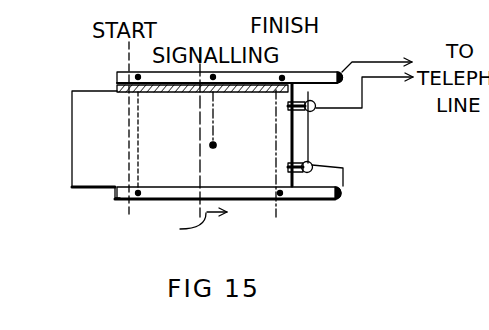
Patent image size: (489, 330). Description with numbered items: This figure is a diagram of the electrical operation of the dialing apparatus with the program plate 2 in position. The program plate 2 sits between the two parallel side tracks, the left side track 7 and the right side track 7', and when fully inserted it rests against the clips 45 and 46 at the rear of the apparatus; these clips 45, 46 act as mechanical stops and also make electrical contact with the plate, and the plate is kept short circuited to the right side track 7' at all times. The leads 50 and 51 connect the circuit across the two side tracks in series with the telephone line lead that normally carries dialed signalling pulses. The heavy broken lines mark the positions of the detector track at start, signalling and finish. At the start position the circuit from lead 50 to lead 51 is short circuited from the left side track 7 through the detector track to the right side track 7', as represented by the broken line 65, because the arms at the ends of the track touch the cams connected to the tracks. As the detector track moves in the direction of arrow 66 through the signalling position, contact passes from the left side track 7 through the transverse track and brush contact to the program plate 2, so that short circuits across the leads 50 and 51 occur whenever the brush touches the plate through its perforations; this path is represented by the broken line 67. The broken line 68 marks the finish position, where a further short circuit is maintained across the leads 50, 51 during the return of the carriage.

The program plate 2 is at (85, 91).
The left side track 7 is at (230, 63).
The right side track 7' is at (228, 215).
The clip 45 is at (313, 110).
The clip 46 is at (310, 163).
The lead 50 is at (360, 58).
The lead 51 is at (393, 78).
The broken line 65 is at (142, 107).
The arrow 66 is at (195, 218).
The broken line 67 is at (215, 113).
The finish marker 68 is at (276, 142).